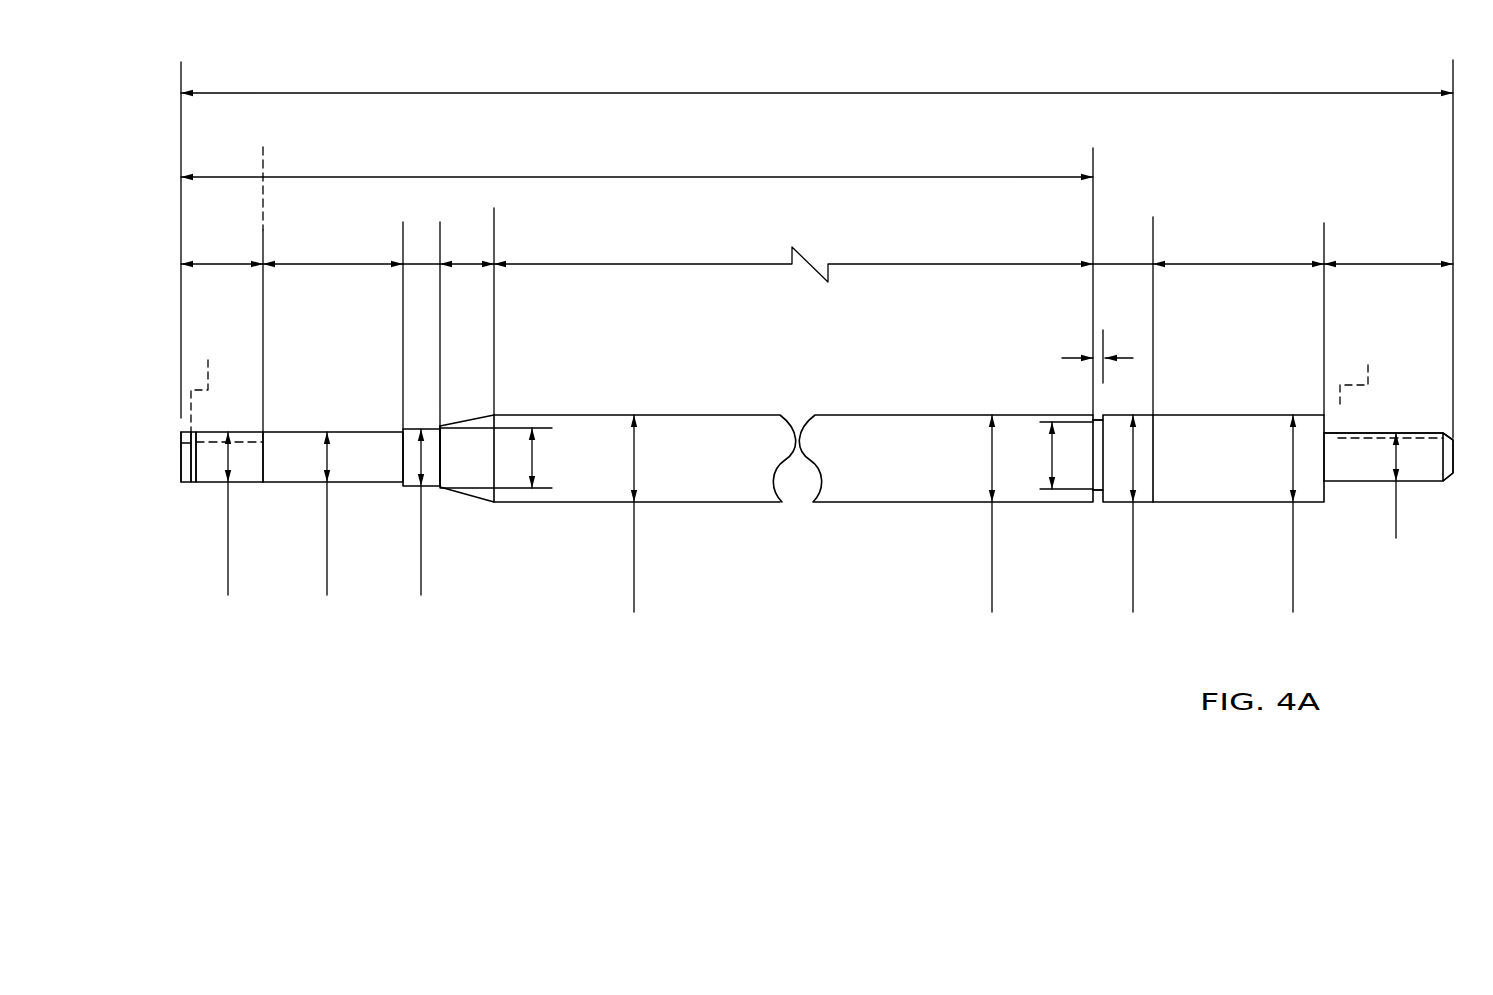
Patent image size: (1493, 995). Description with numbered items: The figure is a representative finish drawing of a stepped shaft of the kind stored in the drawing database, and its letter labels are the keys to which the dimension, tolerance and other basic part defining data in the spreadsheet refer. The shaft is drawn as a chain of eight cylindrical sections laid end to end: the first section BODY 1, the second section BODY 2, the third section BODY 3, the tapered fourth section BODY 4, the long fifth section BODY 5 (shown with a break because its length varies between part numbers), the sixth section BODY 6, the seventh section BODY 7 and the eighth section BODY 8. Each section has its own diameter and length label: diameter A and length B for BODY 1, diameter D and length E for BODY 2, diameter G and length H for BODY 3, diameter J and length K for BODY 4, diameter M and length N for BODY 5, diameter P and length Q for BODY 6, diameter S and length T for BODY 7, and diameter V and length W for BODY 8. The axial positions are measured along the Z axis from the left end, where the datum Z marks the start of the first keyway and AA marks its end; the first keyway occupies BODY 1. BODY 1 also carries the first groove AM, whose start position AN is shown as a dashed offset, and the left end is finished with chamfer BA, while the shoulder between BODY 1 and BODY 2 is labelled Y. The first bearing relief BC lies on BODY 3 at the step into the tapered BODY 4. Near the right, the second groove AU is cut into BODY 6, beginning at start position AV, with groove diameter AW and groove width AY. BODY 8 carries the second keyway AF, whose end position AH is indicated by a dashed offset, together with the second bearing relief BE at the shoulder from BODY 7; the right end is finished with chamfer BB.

The body 1 BODY 1 is at (208, 478).
The body 2 BODY 2 is at (288, 445).
The body 3 BODY 3 is at (408, 463).
The body 4 BODY 4 is at (455, 470).
The body 5 BODY 5 is at (685, 433).
The body 6 BODY 6 is at (1115, 490).
The body 7 BODY 7 is at (1185, 488).
The body 8 BODY 8 is at (1350, 466).
The Z-axis start position of keyway 1 Z is at (183, 225).
The Z-axis end position of keyway 1 AA is at (264, 276).
The second groove start position AV is at (637, 162).
The length 1 B is at (222, 249).
The length 2 E is at (333, 249).
The length 3 H is at (421, 247).
The length 4 K is at (467, 249).
The length 5 N is at (793, 257).
The length 6 Q is at (1123, 248).
The length 7 T is at (1238, 249).
The length 8 W is at (1388, 249).
The diameter 1 A is at (228, 508).
The diameter 2 D is at (327, 568).
The diameter 3 G is at (421, 573).
The diameter 4 J is at (532, 458).
The diameter 5 M is at (634, 588).
The second groove diameter AW is at (1034, 455).
The diameter 6 P is at (1133, 585).
The diameter 7 S is at (1293, 540).
The diameter 8 V is at (1396, 510).
The second groove width AY is at (1082, 356).
The first groove start position AN is at (206, 379).
The chamfer 1 BA is at (172, 427).
The Z-axis end position Y is at (251, 422).
The first groove AM is at (191, 492).
The first bearing relief BC is at (430, 410).
The second groove AU is at (1110, 399).
The Z-axis end position of keyway 2 AH is at (1361, 373).
The second bearing relief BE is at (1336, 421).
The keyway 2 AF is at (1427, 420).
The chamfer 2 BB is at (1452, 486).